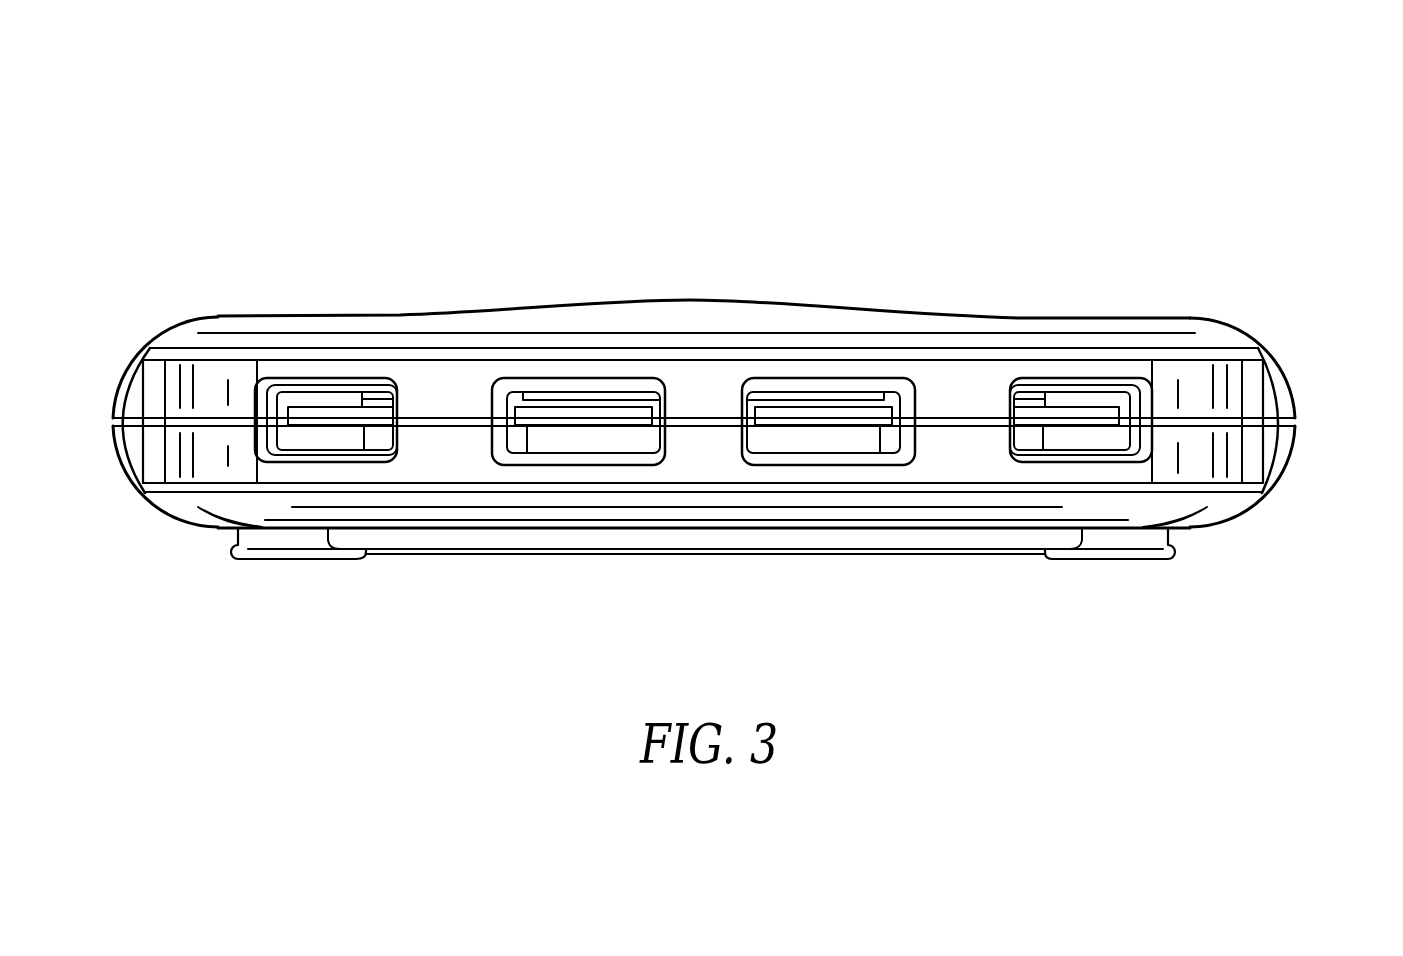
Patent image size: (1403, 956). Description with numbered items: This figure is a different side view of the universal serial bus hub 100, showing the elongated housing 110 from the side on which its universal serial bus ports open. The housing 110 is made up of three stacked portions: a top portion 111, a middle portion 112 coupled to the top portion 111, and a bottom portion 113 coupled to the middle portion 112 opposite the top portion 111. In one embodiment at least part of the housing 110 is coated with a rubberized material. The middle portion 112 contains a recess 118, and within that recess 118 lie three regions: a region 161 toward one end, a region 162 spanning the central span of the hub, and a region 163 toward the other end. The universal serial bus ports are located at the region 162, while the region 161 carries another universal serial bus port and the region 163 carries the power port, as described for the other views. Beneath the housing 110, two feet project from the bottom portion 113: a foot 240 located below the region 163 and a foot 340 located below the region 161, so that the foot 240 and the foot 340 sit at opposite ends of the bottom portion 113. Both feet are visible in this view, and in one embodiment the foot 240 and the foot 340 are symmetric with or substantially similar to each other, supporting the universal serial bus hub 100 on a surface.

The universal serial bus hub 100 is at (308, 170).
The housing 110 is at (540, 582).
The top portion 111 is at (1220, 318).
The middle portion 112 is at (1308, 332).
The bottom portion 113 is at (1235, 522).
The recess 118 is at (468, 407).
The region 161 is at (145, 388).
The region 162 is at (1143, 292).
The region 163 is at (1257, 393).
The foot 240 is at (1120, 562).
The foot 340 is at (275, 565).